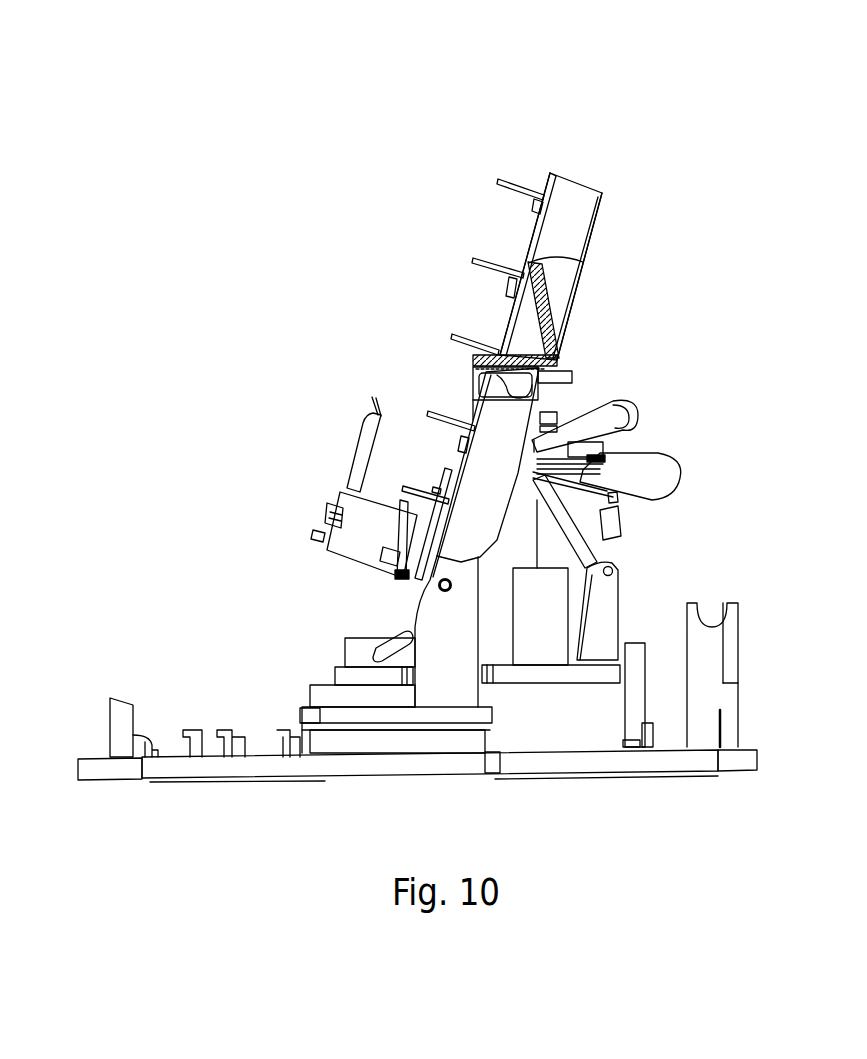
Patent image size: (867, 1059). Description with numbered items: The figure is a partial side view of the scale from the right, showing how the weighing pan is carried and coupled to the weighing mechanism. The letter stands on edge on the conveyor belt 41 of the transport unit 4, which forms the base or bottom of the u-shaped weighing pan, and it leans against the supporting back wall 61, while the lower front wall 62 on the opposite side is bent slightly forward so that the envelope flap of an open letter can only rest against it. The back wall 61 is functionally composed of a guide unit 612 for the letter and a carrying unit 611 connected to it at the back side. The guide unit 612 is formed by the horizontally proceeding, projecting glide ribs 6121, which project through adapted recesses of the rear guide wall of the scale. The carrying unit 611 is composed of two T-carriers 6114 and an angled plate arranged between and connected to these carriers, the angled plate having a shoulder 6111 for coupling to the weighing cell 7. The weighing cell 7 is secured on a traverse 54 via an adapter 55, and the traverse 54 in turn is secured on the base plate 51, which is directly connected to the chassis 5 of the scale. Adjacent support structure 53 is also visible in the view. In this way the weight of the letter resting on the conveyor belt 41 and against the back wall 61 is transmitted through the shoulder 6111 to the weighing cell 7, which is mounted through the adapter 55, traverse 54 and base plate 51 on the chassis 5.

The back wall 61 is at (588, 147).
The carrying unit 611 is at (605, 193).
The shoulder 6111 is at (553, 358).
The T-carrier 6114 is at (560, 290).
The guide unit 612 is at (535, 160).
The glide ribs 6121 is at (498, 180).
The front wall 62 is at (377, 417).
The weighing cell 7 is at (548, 403).
The adapter 55 is at (607, 460).
The traverse 54 is at (630, 500).
The support block 53 is at (517, 548).
The base plate 51 is at (330, 674).
The chassis 5 is at (757, 750).
The transport unit 4 is at (368, 566).
The conveyor belt 41 is at (360, 548).